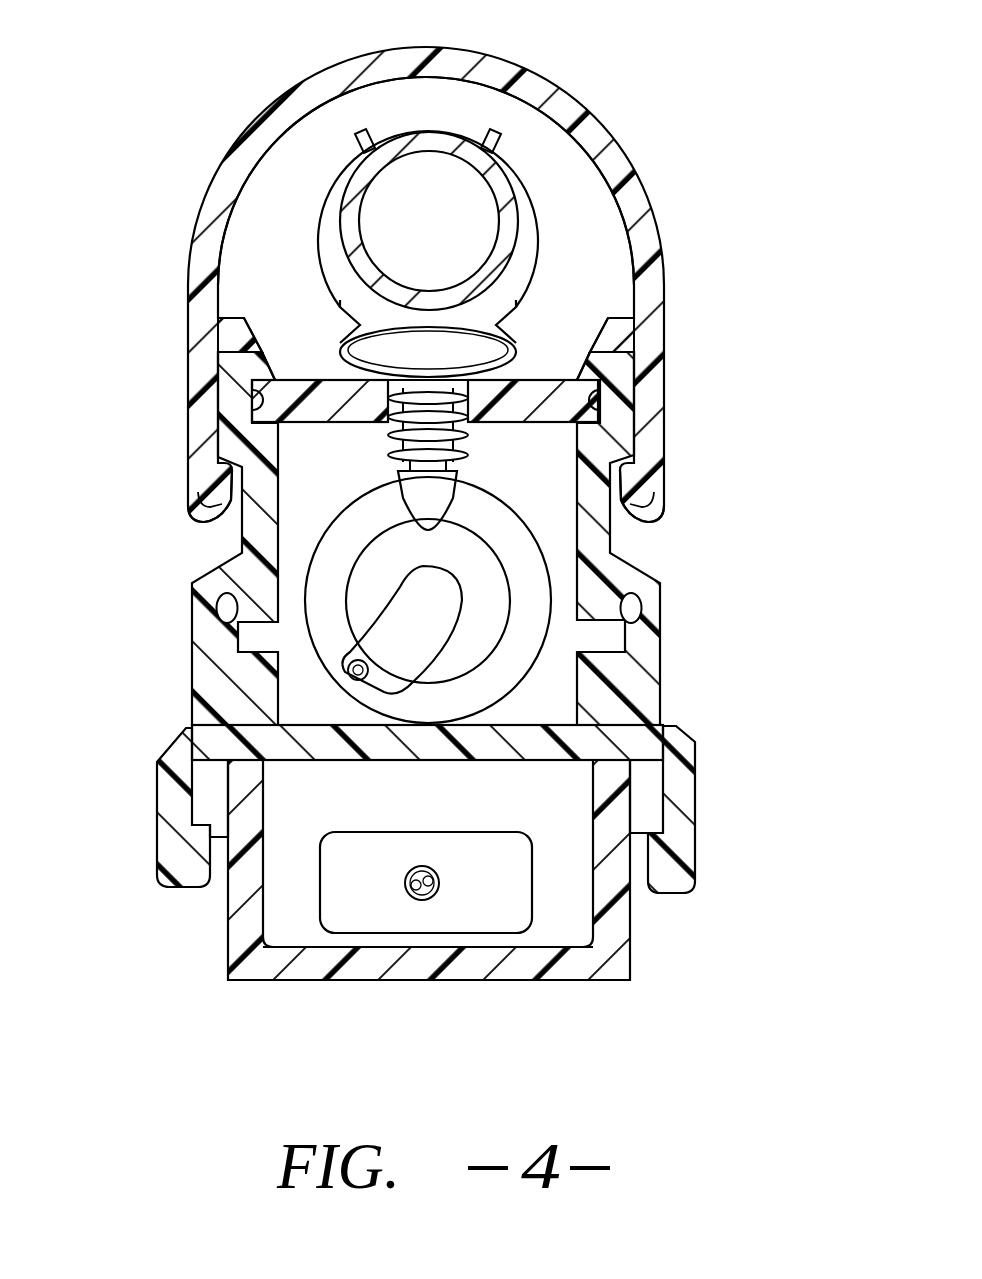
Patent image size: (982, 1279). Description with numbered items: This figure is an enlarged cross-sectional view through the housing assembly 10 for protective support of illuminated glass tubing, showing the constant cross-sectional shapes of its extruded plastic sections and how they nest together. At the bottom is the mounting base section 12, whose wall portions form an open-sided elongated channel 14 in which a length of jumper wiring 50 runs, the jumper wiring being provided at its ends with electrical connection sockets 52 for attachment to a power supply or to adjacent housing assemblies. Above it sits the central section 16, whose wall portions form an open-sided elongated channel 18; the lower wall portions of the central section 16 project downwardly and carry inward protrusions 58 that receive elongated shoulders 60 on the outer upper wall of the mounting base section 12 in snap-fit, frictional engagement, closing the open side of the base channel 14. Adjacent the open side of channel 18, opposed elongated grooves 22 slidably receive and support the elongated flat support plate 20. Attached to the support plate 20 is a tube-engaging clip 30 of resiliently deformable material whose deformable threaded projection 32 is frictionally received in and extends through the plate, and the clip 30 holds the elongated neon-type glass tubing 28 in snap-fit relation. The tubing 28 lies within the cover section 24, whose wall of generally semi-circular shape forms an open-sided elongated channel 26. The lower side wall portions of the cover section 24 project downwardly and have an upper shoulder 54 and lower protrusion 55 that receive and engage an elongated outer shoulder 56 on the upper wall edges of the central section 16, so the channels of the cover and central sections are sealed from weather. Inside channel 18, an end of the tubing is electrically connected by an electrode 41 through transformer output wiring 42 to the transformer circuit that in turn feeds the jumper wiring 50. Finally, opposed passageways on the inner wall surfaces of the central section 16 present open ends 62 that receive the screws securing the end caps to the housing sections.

The housing assembly 10 is at (745, 241).
The mounting base section 12 is at (638, 975).
The elongated channel 14 is at (295, 927).
The central section 16 is at (665, 698).
The elongated channel 18 is at (258, 690).
The support plate 20 is at (328, 400).
The elongated grooves 22 is at (228, 385).
The cover section 24 is at (587, 98).
The elongated channel 26 is at (588, 200).
The glass tubing 28 is at (425, 136).
The tube-engaging clips 30 is at (316, 217).
The threaded projection 32 is at (458, 470).
The electrodes 41 is at (375, 510).
The transformer output wiring 42 is at (425, 623).
The jumper wiring 50 is at (436, 898).
The electrical connection sockets 52 is at (487, 908).
The upper shoulder 54 is at (233, 333).
The lower protrusion 55 is at (227, 503).
The outer shoulder 56 is at (232, 406).
The inward protrusions 58 is at (212, 887).
The elongated shoulders 60 is at (218, 806).
The open ends of passageways 62 is at (192, 583).